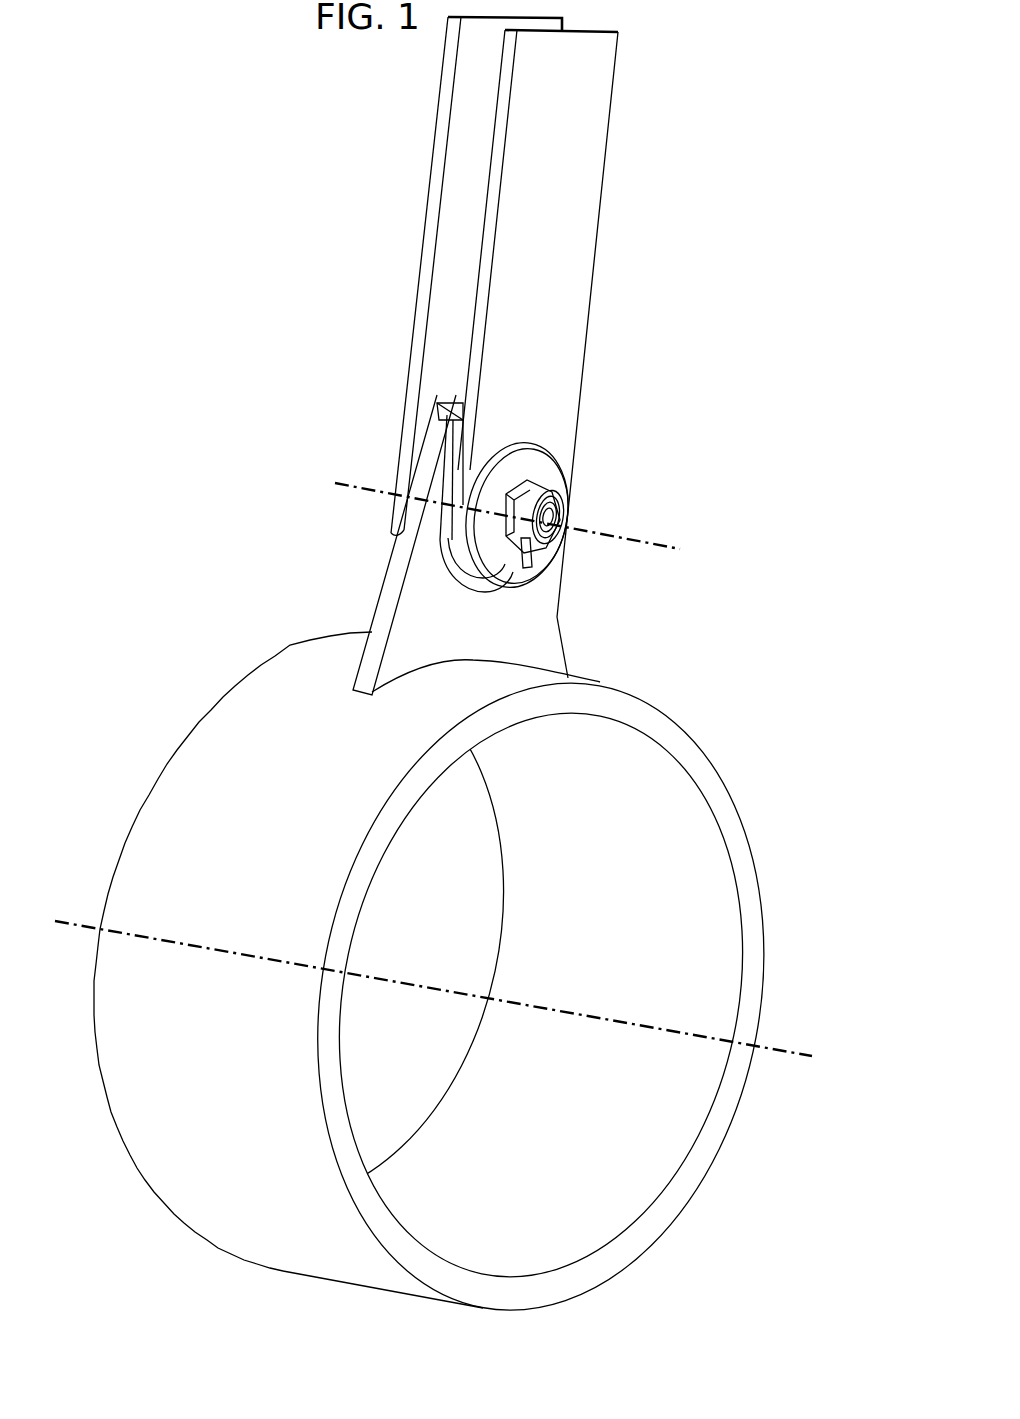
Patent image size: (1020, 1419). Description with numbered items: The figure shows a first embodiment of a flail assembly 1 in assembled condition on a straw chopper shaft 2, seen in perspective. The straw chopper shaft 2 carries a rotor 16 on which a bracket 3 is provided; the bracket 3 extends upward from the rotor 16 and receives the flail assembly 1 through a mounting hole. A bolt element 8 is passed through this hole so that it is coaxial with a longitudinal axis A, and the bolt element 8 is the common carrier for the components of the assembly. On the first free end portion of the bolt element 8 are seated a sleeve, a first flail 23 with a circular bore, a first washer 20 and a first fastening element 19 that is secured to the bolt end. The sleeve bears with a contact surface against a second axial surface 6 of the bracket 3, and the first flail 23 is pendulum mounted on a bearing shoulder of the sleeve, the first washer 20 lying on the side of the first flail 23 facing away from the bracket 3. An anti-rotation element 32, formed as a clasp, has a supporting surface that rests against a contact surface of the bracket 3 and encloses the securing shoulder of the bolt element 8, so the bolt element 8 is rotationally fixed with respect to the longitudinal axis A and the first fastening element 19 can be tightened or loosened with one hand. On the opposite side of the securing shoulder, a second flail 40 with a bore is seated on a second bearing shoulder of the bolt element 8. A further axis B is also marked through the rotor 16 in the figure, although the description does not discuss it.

The flail assembly 1 is at (303, 318).
The straw chopper shaft 2 is at (710, 1213).
The bracket 3 is at (523, 612).
The second axial surface 6 is at (397, 651).
The bolt element 8 is at (563, 522).
The rotor 16 is at (692, 1112).
The first fastening element 19 is at (537, 490).
The first washer 20 is at (545, 450).
The first flail 23 is at (572, 238).
The anti-rotation element 32 is at (457, 412).
The second flail 40 is at (457, 172).
The longitudinal axis A is at (496, 516).
The collar axis B is at (425, 966).